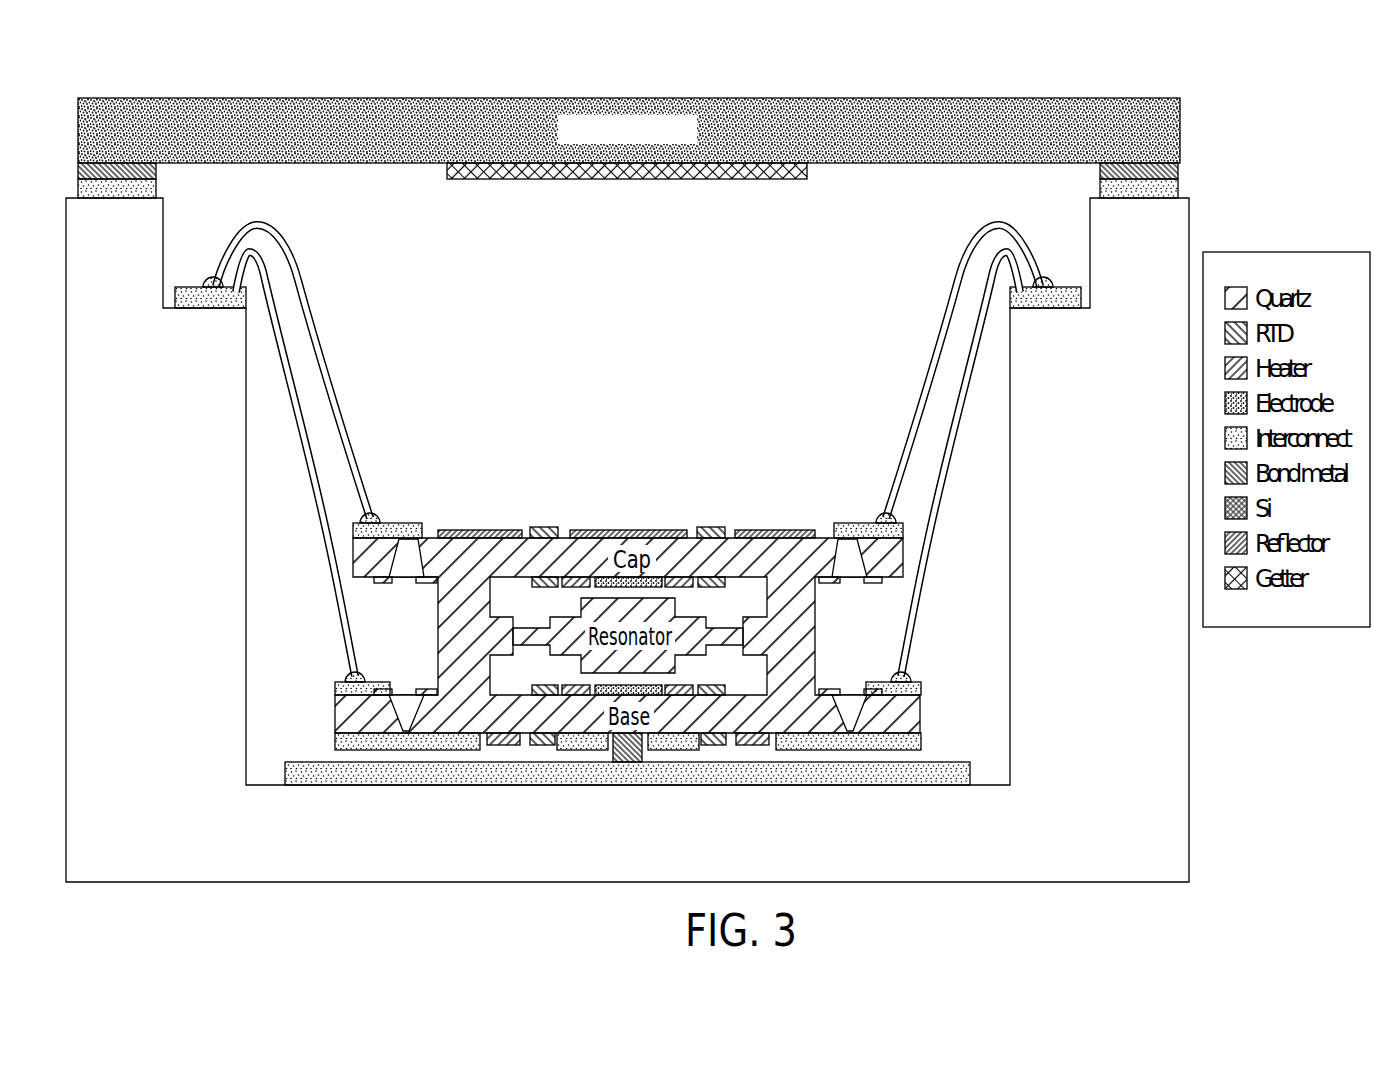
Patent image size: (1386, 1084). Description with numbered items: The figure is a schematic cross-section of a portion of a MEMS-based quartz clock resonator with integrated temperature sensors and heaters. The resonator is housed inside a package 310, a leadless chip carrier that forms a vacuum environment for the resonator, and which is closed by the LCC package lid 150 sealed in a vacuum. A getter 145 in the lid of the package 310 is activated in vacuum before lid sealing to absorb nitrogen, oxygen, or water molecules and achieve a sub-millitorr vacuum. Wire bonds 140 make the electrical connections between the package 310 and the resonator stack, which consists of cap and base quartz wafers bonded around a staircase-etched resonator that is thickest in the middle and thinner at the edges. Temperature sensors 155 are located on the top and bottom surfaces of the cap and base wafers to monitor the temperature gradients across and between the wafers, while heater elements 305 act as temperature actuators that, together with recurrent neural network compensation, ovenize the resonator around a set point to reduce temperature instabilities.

The lid 150 is at (630, 97).
The getter 145 is at (446, 176).
The wire bonds 140 is at (292, 378).
The temperature sensors 155 is at (542, 527).
The heater elements 305 is at (576, 588).
The package 310 is at (1189, 755).